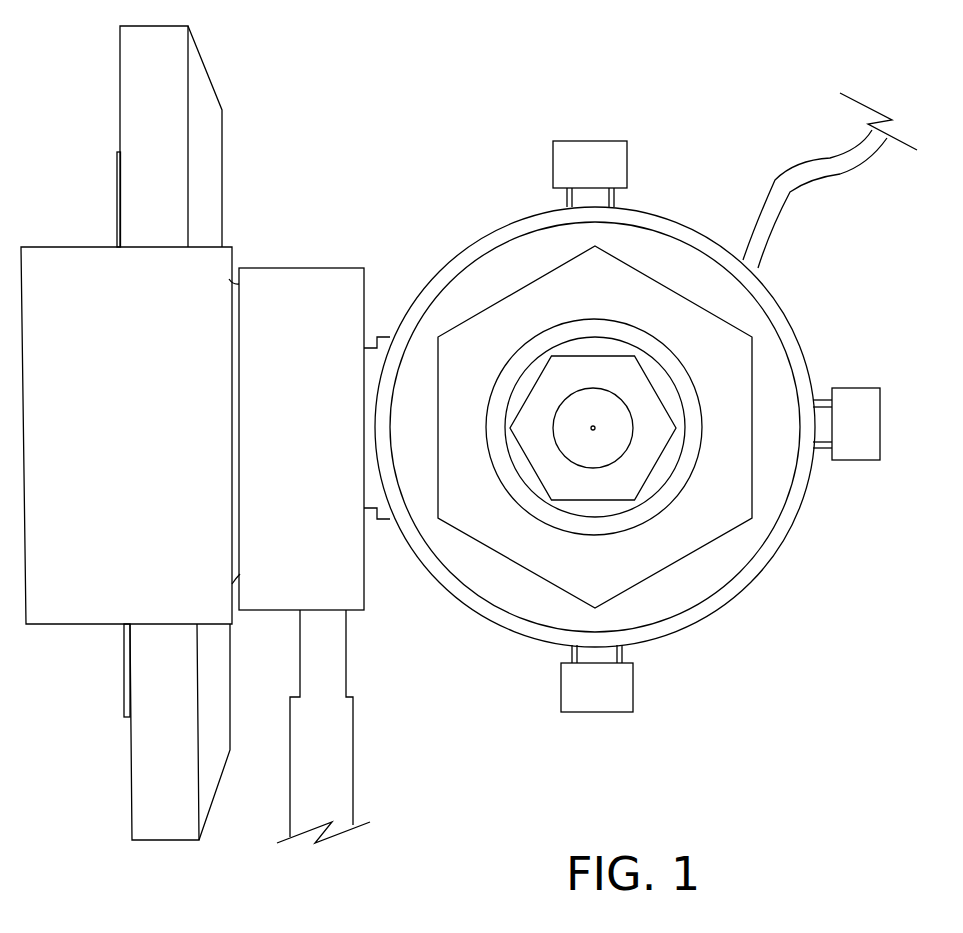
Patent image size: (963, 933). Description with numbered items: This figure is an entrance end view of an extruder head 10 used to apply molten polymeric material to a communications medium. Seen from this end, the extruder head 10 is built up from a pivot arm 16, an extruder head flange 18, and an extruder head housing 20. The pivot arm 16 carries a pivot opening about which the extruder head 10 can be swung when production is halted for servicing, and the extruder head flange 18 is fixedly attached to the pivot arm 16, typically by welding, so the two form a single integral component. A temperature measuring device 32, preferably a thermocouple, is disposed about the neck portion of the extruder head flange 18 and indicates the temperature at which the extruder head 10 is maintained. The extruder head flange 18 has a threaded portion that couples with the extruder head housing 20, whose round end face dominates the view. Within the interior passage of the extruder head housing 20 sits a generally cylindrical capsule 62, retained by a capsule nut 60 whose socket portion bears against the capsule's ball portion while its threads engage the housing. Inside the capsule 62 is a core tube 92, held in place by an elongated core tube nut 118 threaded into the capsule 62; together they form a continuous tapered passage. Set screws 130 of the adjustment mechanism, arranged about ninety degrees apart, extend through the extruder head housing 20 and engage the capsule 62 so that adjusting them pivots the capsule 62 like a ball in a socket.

The extruder head 10 is at (722, 112).
The pivot arm 16 is at (53, 640).
The extruder head flange 18 is at (128, 70).
The extruder head housing 20 is at (710, 585).
The temperature measuring device 32 is at (310, 276).
The capsule nut 60 is at (610, 588).
The capsule 62 is at (600, 505).
The core tube 92 is at (567, 414).
The core tube nut 118 is at (648, 400).
The set screws 130 is at (592, 150).